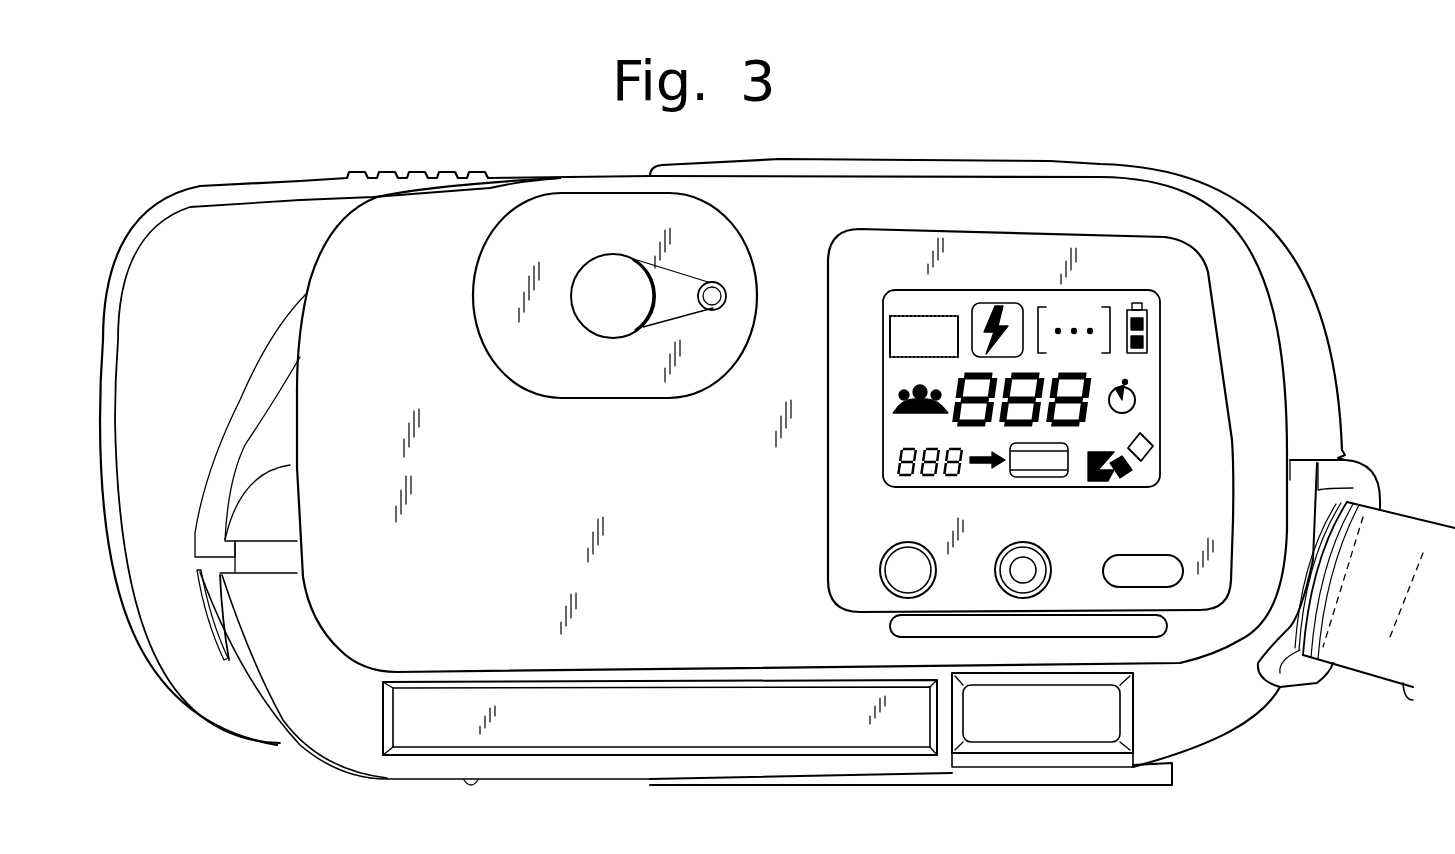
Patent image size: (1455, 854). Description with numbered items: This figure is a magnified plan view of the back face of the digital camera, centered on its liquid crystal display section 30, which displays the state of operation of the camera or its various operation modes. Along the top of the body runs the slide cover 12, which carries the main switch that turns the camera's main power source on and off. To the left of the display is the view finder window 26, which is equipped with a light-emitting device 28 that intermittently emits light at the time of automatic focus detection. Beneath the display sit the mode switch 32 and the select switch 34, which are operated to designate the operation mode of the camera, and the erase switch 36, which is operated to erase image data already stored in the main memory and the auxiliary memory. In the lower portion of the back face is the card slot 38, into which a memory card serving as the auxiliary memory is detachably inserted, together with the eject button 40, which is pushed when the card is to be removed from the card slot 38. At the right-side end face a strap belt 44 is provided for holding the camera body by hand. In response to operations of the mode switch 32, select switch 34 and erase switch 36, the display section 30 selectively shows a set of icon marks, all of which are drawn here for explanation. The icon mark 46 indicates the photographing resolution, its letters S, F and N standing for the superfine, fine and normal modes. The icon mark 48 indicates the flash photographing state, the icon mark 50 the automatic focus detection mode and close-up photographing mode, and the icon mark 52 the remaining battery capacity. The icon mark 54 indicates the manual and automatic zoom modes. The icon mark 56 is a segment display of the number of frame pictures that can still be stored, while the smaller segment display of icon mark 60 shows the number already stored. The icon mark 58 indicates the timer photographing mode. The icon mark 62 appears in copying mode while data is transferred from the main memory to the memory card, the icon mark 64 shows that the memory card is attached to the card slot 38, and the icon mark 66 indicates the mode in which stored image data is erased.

The slide cover 12 is at (298, 190).
The view finder window 26 is at (592, 282).
The light-emitting device 28 is at (717, 285).
The liquid crystal display section 30 is at (1040, 290).
The mode switch 32 is at (897, 577).
The select switch 34 is at (1017, 573).
The erase switch 36 is at (1122, 575).
The card slot 38 is at (458, 733).
The eject button 40 is at (1043, 733).
The strap belt 44 is at (1373, 657).
The icon mark 46 is at (885, 320).
The icon mark 48 is at (983, 303).
The icon mark 50 is at (1093, 307).
The icon mark 52 is at (1150, 318).
The icon mark 54 is at (892, 395).
The icon mark 56 is at (1087, 377).
The icon mark 58 is at (1143, 403).
The icon mark 60 is at (897, 458).
The icon mark 62 is at (982, 470).
The icon mark 64 is at (1067, 475).
The icon mark 66 is at (1147, 450).